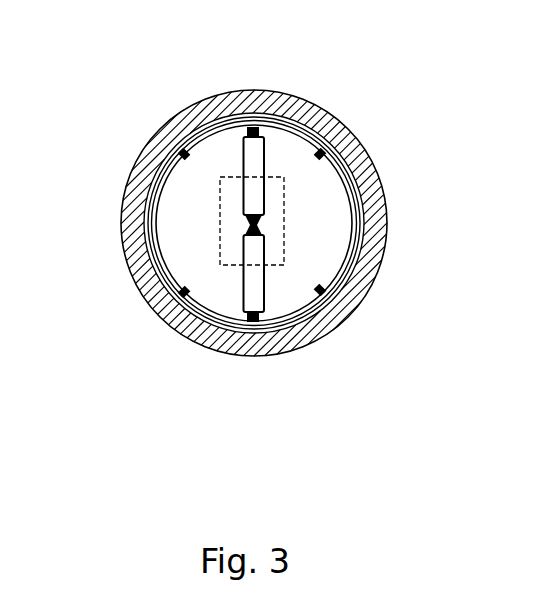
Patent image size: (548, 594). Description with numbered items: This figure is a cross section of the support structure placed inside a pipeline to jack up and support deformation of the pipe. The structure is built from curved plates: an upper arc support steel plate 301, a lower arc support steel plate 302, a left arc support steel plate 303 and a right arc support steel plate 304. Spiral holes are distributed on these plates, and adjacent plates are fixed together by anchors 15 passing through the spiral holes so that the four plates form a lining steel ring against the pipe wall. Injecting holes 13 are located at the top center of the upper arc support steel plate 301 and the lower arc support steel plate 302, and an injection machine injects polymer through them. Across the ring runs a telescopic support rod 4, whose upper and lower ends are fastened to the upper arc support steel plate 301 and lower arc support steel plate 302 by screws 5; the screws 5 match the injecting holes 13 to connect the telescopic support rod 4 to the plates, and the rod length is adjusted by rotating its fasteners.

The injecting holes 13 is at (249, 218).
The upper arc support steel plate 301 is at (281, 93).
The lower arc support steel plate 302 is at (300, 320).
The left arc support steel plate 303 is at (149, 168).
The right arc support steel plate 304 is at (372, 198).
The anchors 15 is at (322, 151).
The telescopic support rod 4 is at (287, 217).
The screws 5 is at (246, 331).